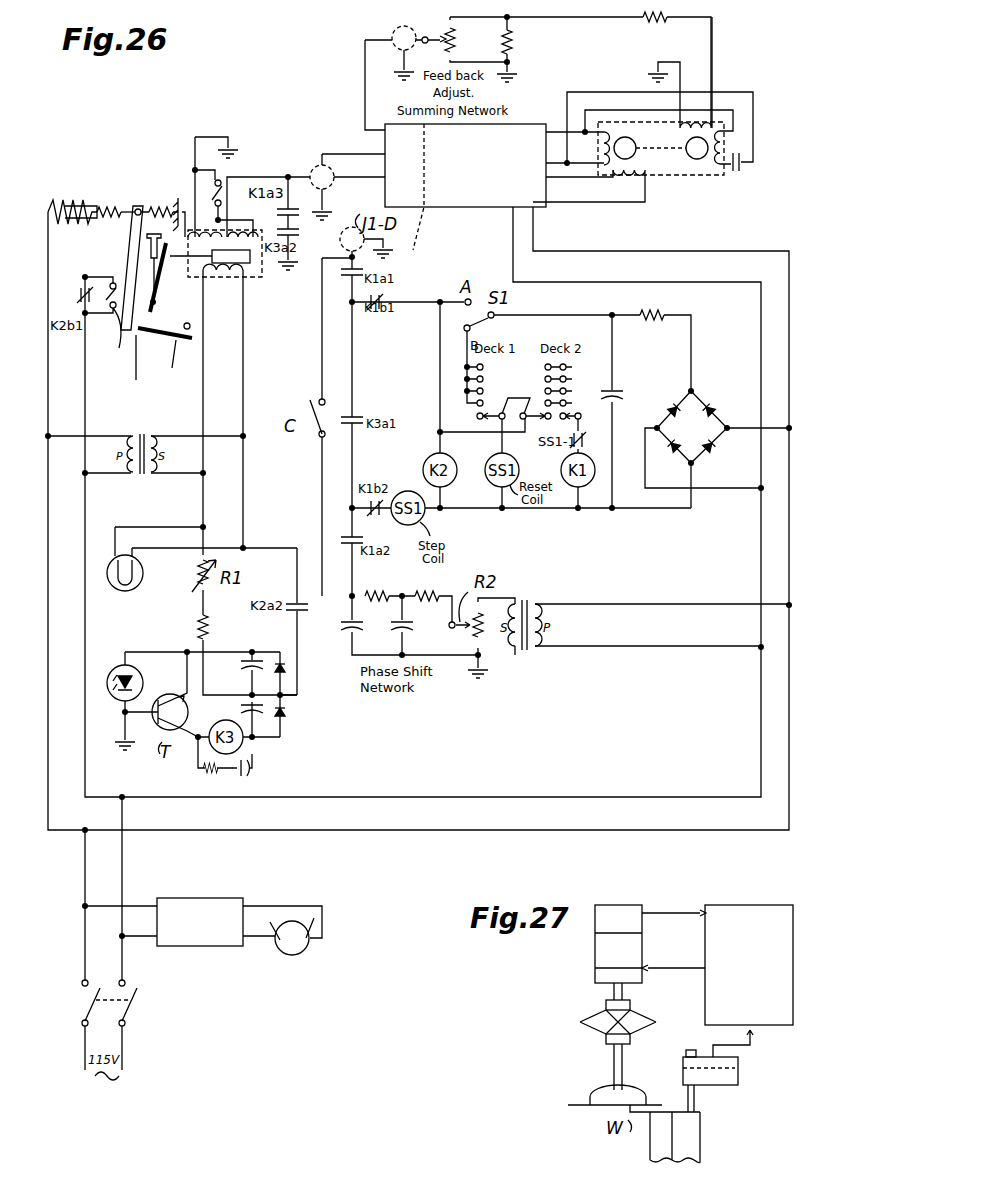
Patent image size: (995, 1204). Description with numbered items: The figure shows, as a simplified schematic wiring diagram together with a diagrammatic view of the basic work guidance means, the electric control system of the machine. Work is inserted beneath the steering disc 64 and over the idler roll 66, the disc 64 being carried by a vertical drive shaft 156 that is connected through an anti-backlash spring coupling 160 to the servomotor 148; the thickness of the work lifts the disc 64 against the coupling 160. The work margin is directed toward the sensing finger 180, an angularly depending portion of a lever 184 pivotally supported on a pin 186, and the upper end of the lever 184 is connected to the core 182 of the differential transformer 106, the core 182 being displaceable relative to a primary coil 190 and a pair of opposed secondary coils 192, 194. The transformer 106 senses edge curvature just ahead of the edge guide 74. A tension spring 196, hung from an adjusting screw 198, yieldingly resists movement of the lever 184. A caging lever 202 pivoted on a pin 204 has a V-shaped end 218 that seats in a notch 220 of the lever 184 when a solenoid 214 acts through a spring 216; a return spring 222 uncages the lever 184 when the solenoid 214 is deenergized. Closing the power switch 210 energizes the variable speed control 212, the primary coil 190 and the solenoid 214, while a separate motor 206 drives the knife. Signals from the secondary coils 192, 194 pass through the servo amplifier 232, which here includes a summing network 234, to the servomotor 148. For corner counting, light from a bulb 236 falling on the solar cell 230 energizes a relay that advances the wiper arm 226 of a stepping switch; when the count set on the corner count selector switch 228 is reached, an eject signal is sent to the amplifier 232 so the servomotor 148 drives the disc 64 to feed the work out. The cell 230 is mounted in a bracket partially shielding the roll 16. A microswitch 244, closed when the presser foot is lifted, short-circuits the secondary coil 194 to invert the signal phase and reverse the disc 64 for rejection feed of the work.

In FIG. 26, the solenoid 214 is at (90, 208).
In FIG. 26, the spring 216 is at (114, 208).
In FIG. 26, the return spring 222 is at (158, 208).
In FIG. 26, the secondary coil 194 is at (180, 205).
In FIG. 26, the microswitch 244 is at (235, 170).
In FIG. 26, the secondary coil 192 is at (226, 236).
In FIG. 26, the core 182 is at (248, 256).
In FIG. 27, the core 182 is at (738, 1070).
In FIG. 26, the primary coil 190 is at (244, 272).
In FIG. 26, the transformer 106 is at (257, 313).
In FIG. 27, the transformer 106 is at (749, 1100).
In FIG. 26, the caging lever 202 is at (133, 238).
In FIG. 26, the adjusting screw 198 is at (150, 240).
In FIG. 26, the tension spring 196 is at (160, 275).
In FIG. 26, the pin 186 is at (190, 326).
In FIG. 26, the lever 184 is at (193, 338).
In FIG. 26, the pin 204 is at (103, 325).
In FIG. 26, the notch 220 is at (136, 380).
In FIG. 26, the V-shaped end 218 is at (140, 340).
In FIG. 26, the sensing finger 180 is at (172, 368).
In FIG. 27, the sensing finger 180 is at (694, 1098).
In FIG. 26, the servomotor 148 is at (667, 178).
In FIG. 27, the servomotor 148 is at (595, 937).
In FIG. 26, the servo amplifier 232 is at (455, 210).
In FIG. 27, the servo amplifier 232 is at (770, 999).
In FIG. 26, the summing network 234 is at (428, 192).
In FIG. 26, the wiper arm 226 is at (505, 360).
In FIG. 26, the corner count selector switch 228 is at (624, 404).
In FIG. 26, the bulb 236 is at (140, 586).
In FIG. 26, the solar cell 230 is at (112, 660).
In FIG. 26, the variable speed control 212 is at (203, 946).
In FIG. 26, the motor 206 is at (298, 955).
In FIG. 26, the power switch 210 is at (137, 1000).
In FIG. 27, the drive shaft 156 is at (614, 1062).
In FIG. 27, the anti-backlash spring coupling 160 is at (596, 1032).
In FIG. 27, the steering disc 64 is at (580, 1102).
In FIG. 27, the roll 16 is at (700, 1150).
In FIG. 27, the idler roll 66 is at (650, 1150).
In FIG. 27, the edge guide 74 is at (683, 1062).